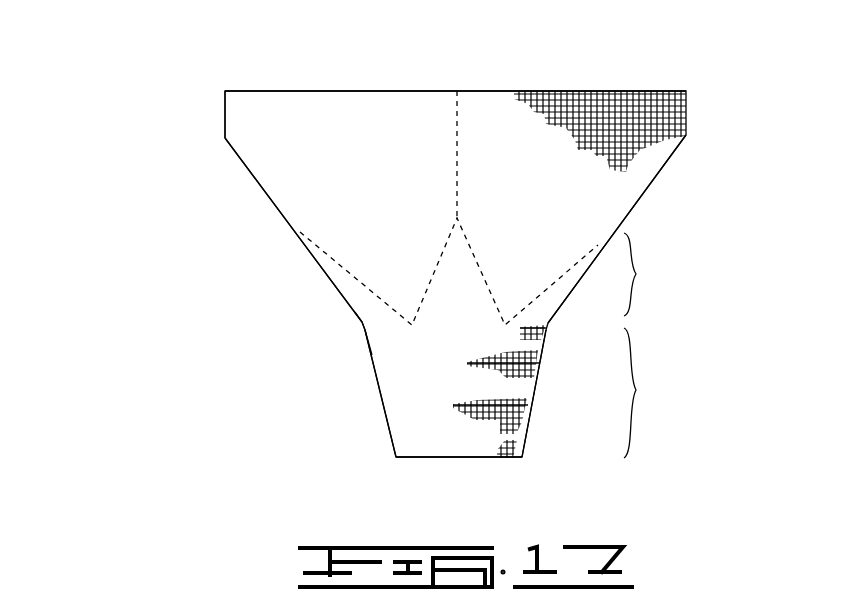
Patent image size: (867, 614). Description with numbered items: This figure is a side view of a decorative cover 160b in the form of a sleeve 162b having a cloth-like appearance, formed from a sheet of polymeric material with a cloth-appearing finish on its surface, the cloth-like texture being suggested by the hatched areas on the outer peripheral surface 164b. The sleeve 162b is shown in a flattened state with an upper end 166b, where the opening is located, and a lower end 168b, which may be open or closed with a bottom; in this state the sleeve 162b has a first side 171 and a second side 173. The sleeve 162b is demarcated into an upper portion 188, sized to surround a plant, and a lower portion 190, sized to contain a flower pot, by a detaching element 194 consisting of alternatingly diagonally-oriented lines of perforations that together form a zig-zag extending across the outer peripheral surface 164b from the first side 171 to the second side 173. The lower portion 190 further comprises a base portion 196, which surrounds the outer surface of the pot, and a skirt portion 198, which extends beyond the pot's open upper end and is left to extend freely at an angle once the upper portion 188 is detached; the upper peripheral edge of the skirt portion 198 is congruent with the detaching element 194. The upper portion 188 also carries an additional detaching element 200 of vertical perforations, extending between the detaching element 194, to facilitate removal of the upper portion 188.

The decorative cover 160b is at (268, 56).
The sleeve 162b is at (190, 135).
The outer peripheral surface 164b is at (553, 105).
The upper end 166b is at (480, 90).
The lower end 168b is at (495, 459).
The first side 171 is at (347, 300).
The second side 173 is at (666, 170).
The upper portion 188 is at (300, 192).
The lower portion 190 is at (412, 390).
The detaching element 194 is at (440, 262).
The base portion 196 is at (636, 390).
The skirt portion 198 is at (636, 274).
The additional detaching element 200 is at (450, 130).